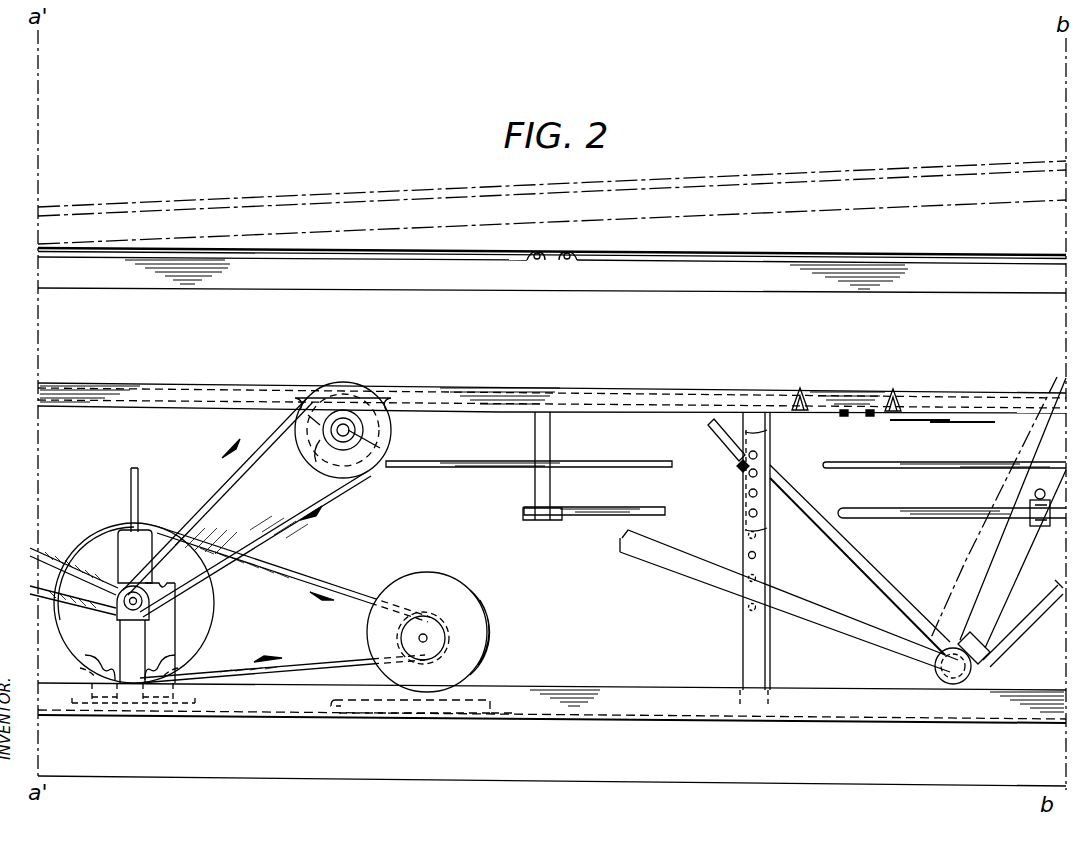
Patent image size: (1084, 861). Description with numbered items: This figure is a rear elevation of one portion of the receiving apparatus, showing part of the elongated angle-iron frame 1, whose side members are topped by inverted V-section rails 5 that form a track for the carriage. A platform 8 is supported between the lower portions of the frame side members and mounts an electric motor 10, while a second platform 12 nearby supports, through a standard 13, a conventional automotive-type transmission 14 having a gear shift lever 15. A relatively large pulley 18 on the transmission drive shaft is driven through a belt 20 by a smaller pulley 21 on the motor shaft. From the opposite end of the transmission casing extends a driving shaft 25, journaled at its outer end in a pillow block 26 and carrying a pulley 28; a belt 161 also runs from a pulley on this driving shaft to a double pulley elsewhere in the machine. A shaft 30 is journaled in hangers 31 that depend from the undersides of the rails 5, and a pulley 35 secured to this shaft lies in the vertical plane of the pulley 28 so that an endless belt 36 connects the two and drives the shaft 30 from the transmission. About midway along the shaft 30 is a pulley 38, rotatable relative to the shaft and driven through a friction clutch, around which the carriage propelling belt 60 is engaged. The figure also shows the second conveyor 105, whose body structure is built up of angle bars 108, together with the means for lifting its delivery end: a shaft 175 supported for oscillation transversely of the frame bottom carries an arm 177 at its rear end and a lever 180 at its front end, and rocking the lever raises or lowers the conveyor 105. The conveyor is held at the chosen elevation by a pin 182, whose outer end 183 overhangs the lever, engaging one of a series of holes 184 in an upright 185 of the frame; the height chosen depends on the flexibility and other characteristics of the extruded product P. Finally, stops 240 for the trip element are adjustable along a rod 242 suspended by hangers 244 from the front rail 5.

The frame 1 is at (768, 722).
The rail 5 is at (607, 392).
The platform 8 is at (352, 718).
The electric motor 10 is at (472, 617).
The second platform 12 is at (190, 718).
The standard 13 is at (86, 665).
The transmission 14 is at (165, 628).
The gear shift lever 15 is at (139, 492).
The pulley 18 is at (212, 600).
The belt 20 is at (305, 574).
The pulley 21 is at (424, 614).
The driving shaft 25 is at (136, 606).
The pillow block 26 is at (108, 594).
The pulley 28 is at (146, 590).
The shaft 30 is at (340, 433).
The hanger 31 is at (365, 432).
The pulley 35 is at (368, 470).
The endless belt 36 is at (200, 512).
The pulley 38 is at (312, 440).
The carriage propelling belt 60 is at (518, 467).
The second conveyor 105 is at (808, 185).
The angle bar 108 is at (202, 284).
The belt 161 is at (56, 552).
The shaft 175 is at (950, 650).
The arm 177 is at (1018, 633).
The lever 180 is at (858, 572).
The pin 182 is at (758, 455).
The outer end of pin 183 is at (732, 470).
The holes 184 is at (757, 513).
The upright 185 is at (742, 520).
The stop 240 is at (1030, 500).
The rod 242 is at (624, 518).
The hanger 244 is at (551, 488).
The material or product P is at (318, 193).